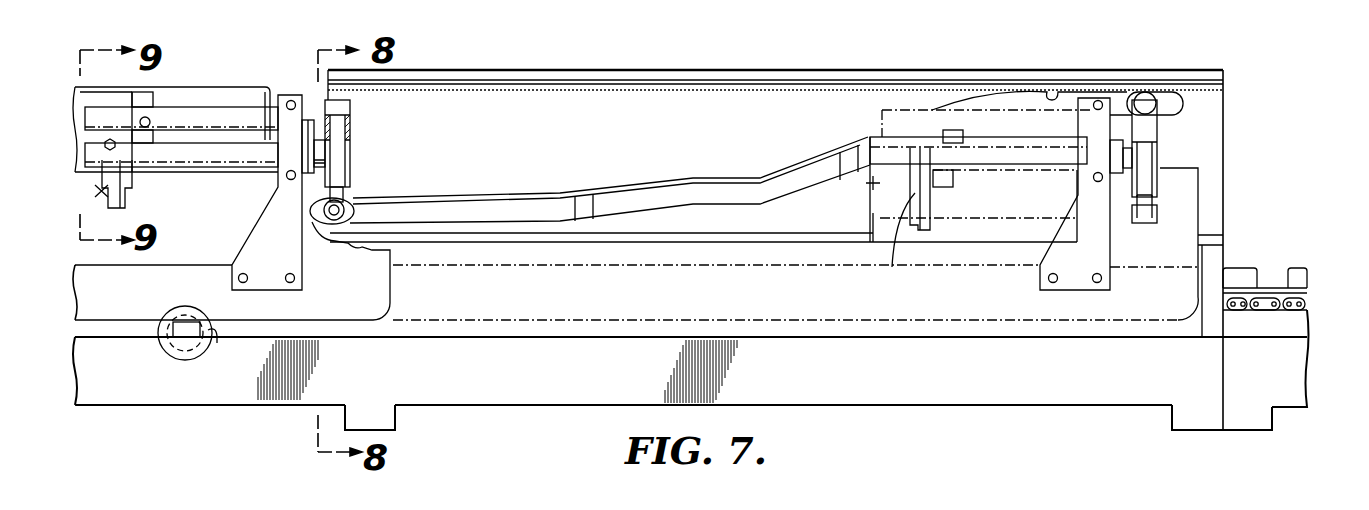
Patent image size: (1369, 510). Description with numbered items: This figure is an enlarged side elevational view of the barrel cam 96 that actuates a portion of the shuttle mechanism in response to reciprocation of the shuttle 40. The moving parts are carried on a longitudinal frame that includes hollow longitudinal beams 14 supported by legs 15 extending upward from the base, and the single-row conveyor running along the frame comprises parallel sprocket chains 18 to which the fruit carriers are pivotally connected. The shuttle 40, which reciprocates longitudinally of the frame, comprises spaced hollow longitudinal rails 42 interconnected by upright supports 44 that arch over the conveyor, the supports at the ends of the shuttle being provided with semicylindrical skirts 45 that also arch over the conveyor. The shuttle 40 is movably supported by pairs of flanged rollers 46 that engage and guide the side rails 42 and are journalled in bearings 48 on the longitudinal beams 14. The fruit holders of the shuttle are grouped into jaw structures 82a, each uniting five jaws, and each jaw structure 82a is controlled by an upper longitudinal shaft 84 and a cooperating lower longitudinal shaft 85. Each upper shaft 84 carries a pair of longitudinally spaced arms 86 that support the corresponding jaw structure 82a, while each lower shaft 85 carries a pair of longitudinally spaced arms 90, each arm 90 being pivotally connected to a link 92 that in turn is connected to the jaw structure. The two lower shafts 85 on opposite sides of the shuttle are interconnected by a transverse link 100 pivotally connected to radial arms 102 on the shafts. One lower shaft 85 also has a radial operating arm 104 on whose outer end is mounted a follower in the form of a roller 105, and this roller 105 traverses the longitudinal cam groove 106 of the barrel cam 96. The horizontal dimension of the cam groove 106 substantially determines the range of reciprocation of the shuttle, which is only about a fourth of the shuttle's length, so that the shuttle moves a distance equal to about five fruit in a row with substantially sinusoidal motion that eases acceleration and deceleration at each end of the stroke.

The longitudinal beam 14 is at (907, 392).
The leg 15 is at (397, 415).
The sprocket chain 18 is at (1307, 302).
The shuttle 40 is at (138, 322).
The longitudinal rail 42 is at (175, 278).
The upright support 44 is at (270, 222).
The semicylindrical skirt 45 is at (393, 255).
The flanged roller 46 is at (215, 343).
The bearing 48 is at (182, 340).
The jaw structure 82a is at (258, 87).
The upper longitudinal shaft 84 is at (205, 115).
The lower longitudinal shaft 85 is at (250, 165).
The arm 86 is at (140, 94).
The arm 90 is at (491, 239).
The link 92 is at (132, 192).
The barrel cam 96 is at (610, 172).
The transverse link 100 is at (350, 108).
The radial arm 102 is at (1145, 212).
The radial operating arm 104 is at (343, 193).
The roller 105 is at (367, 200).
The cam groove 106 is at (453, 205).